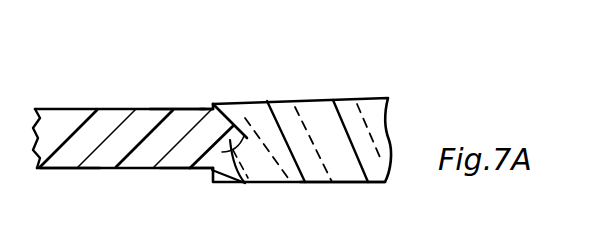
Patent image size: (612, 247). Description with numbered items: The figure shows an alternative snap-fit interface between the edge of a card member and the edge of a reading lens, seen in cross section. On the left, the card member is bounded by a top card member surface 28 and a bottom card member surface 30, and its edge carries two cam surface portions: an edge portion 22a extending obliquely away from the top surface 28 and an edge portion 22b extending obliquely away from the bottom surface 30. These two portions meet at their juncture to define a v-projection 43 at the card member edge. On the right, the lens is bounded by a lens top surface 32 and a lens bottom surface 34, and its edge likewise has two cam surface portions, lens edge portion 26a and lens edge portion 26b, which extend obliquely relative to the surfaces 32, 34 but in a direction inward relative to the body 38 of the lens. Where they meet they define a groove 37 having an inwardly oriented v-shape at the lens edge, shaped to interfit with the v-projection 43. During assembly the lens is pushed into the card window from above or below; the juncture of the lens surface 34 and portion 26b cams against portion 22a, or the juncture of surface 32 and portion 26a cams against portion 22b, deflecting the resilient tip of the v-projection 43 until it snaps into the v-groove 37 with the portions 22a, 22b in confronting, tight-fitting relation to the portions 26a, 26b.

The card member surface 28 is at (80, 109).
The lens surface 32 is at (351, 99).
The card member surface 30 is at (70, 168).
The groove 37 is at (180, 109).
The lens surface 34 is at (354, 182).
The body 38 is at (358, 146).
The card edge portion 22a is at (226, 120).
The card edge portion 22b is at (237, 168).
The lens edge portion 26a is at (216, 110).
The lens edge portion 26b is at (212, 170).
The v-projection 43 is at (180, 168).